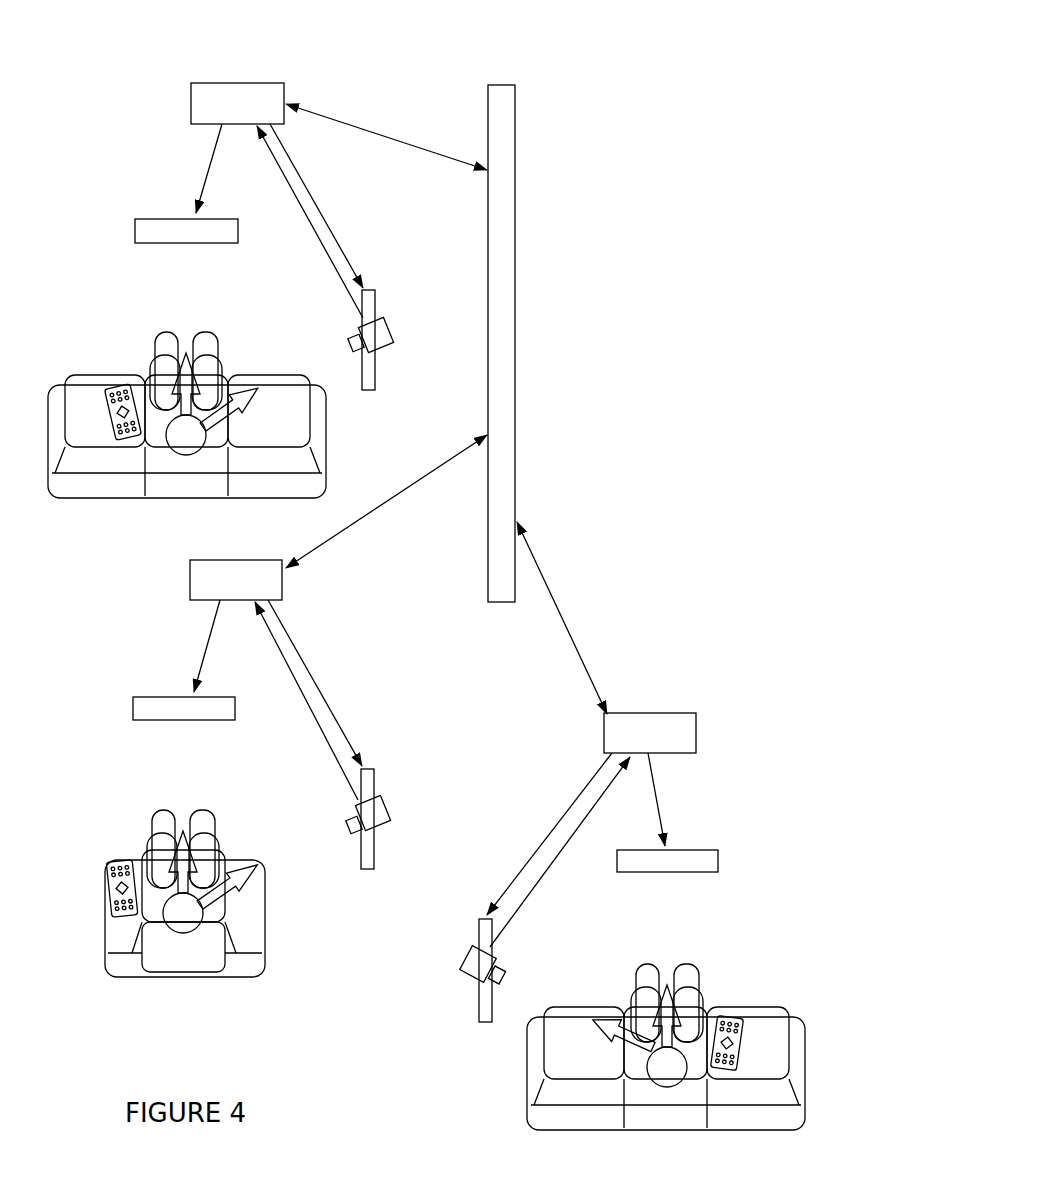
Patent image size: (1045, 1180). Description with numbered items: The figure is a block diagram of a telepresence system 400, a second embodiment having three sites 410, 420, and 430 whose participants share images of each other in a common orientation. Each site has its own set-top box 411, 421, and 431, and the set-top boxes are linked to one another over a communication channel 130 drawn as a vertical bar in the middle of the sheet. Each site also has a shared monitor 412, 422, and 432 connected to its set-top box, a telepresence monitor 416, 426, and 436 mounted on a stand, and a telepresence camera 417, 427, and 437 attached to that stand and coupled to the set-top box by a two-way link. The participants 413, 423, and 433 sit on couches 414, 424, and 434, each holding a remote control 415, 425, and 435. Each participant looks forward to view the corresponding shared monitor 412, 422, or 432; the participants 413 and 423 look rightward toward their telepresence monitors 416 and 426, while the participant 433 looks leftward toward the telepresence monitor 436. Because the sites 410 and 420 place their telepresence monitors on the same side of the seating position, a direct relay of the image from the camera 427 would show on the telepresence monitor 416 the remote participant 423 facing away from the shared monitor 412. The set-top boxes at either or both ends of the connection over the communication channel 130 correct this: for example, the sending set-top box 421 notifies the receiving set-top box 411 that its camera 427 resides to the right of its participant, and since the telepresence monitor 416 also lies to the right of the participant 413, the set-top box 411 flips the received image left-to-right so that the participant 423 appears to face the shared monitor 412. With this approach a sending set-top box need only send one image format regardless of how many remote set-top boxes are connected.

The communication channel 130 is at (506, 85).
The telepresence system 400 is at (692, 86).
The site 410 is at (364, 85).
The set-top box 411 is at (262, 83).
The shared monitor 412 is at (220, 219).
The participant 413 is at (165, 333).
The couch 414 is at (115, 378).
The remote control 415 is at (104, 408).
The telepresence monitor 416 is at (376, 384).
The telepresence camera 417 is at (389, 330).
The site 420 is at (364, 560).
The set-top box 421 is at (257, 560).
The shared monitor 422 is at (216, 697).
The participant 423 is at (160, 810).
The couch 424 is at (250, 862).
The remote control 425 is at (107, 887).
The telepresence monitor 426 is at (375, 862).
The telepresence camera 427 is at (387, 812).
The site 430 is at (493, 743).
The set-top box 431 is at (672, 713).
The shared monitor 432 is at (646, 849).
The participant 433 is at (695, 963).
The couch 434 is at (742, 1008).
The remote control 435 is at (741, 1043).
The telepresence monitor 436 is at (480, 1010).
The telepresence camera 437 is at (467, 957).